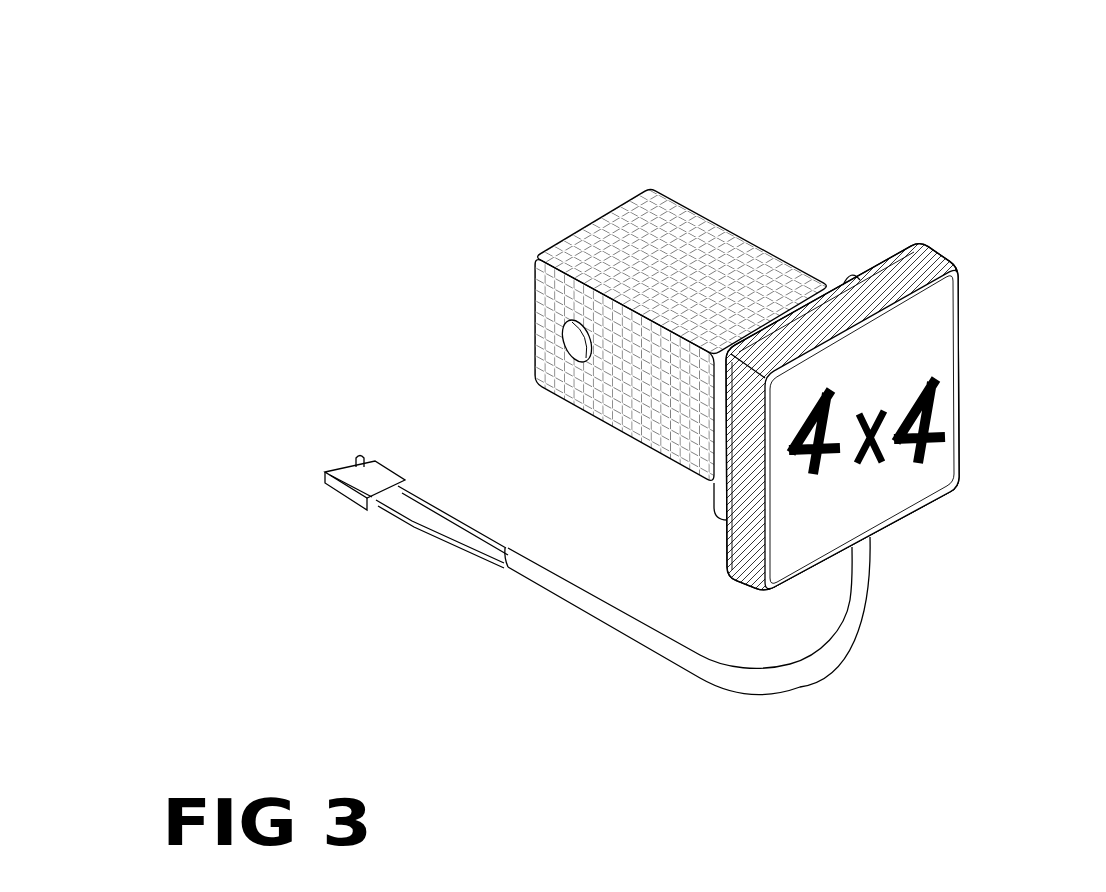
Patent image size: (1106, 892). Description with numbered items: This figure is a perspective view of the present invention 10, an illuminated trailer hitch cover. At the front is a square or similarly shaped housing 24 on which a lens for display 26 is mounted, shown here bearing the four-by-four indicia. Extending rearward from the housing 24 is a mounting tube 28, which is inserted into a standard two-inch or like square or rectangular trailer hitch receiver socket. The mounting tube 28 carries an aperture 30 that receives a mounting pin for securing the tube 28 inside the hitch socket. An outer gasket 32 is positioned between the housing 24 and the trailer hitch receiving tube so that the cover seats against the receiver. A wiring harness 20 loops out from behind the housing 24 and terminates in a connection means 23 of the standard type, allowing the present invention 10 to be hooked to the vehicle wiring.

The present invention 10 is at (848, 185).
The mounting tube 28 is at (743, 240).
The aperture 30 is at (570, 322).
The housing 24 is at (940, 248).
The lens for display 26 is at (942, 362).
The connection means 23 is at (345, 498).
The outer gasket 32 is at (713, 507).
The wiring harness 20 is at (713, 677).